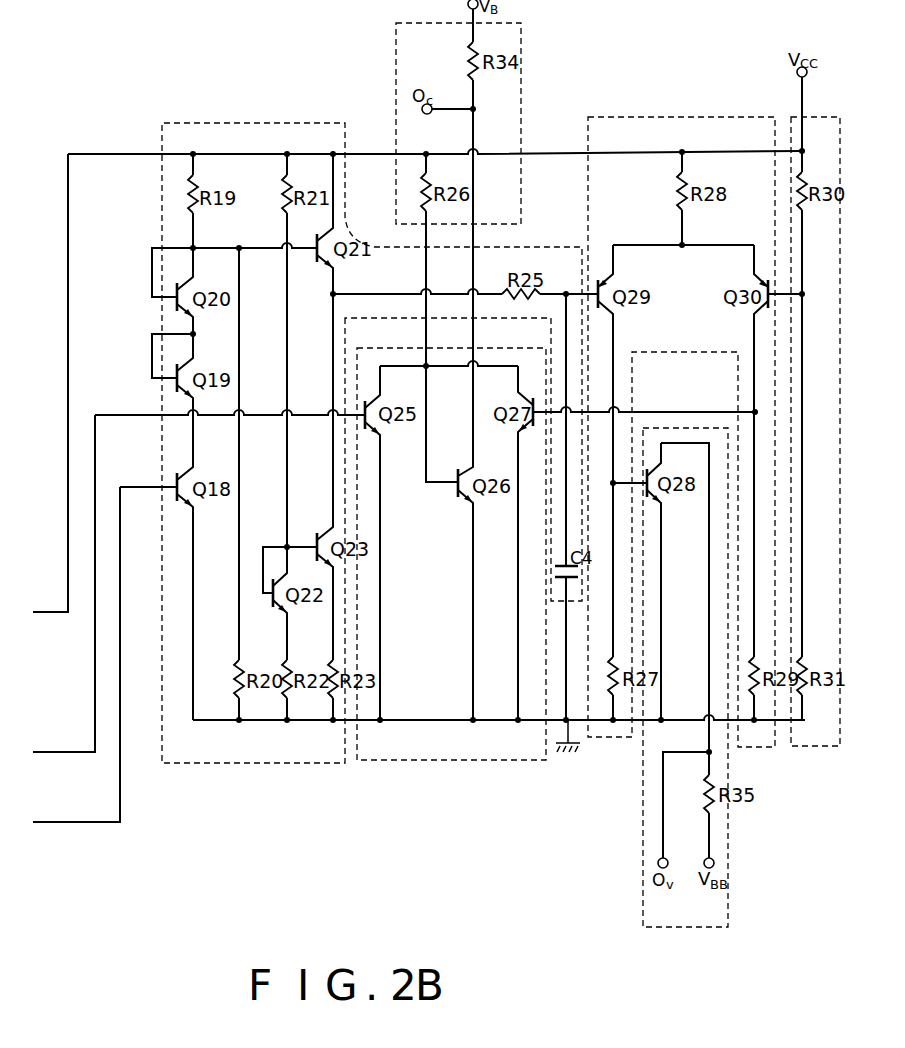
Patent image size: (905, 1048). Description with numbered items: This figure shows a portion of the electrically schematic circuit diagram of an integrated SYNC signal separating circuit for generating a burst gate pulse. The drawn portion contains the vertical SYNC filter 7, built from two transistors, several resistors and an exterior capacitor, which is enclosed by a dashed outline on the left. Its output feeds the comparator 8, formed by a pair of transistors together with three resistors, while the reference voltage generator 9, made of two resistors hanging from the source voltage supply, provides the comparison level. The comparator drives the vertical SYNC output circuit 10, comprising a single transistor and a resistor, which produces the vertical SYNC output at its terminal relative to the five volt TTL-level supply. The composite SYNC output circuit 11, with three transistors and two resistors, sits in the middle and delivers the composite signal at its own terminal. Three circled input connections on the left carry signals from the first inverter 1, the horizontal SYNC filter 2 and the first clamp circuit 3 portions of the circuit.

The vertical SYNC filter 7 is at (228, 122).
The comparator 8 is at (674, 116).
The reference voltage generator 9 is at (812, 748).
The vertical SYNC output circuit 10 is at (642, 832).
The composite SYNC output circuit 11 is at (445, 799).
The first inverter 1 is at (42, 599).
The horizontal SYNC filter 2 is at (45, 740).
The first clamp circuit 3 is at (47, 810).